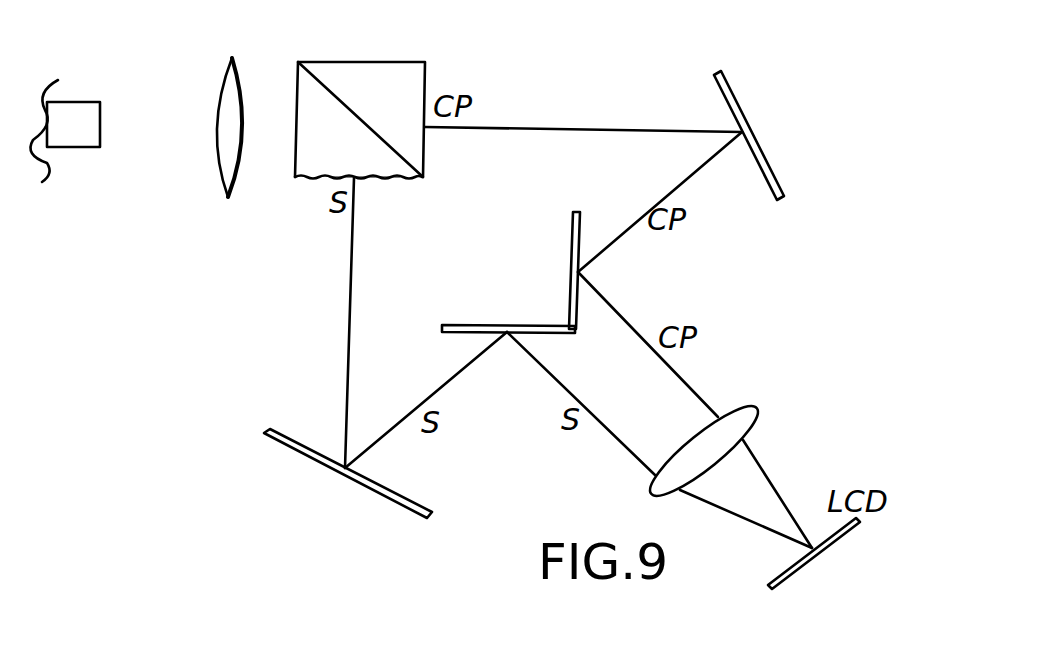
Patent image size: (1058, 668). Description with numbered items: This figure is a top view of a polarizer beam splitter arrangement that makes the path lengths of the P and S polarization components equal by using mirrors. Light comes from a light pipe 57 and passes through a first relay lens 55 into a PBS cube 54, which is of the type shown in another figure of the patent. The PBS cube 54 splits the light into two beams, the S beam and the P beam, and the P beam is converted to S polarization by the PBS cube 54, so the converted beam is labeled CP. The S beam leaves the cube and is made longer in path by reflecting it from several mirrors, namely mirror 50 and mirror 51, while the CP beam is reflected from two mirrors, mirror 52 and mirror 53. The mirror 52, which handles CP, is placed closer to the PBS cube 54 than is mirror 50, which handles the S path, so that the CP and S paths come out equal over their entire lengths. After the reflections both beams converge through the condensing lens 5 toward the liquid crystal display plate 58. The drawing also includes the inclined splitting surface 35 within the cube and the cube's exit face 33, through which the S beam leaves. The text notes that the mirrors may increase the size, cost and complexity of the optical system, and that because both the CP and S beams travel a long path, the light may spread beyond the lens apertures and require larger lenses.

The light pipe 57 is at (78, 107).
The first relay lens 55 is at (240, 167).
The PBS cube 54 is at (395, 62).
The polarization splitting surface 35 is at (362, 122).
The exit face of beam splitter 33 is at (393, 182).
The mirror 52 is at (758, 132).
The mirror 53 is at (570, 252).
The mirror 51 is at (470, 325).
The mirror 50 is at (308, 465).
The condenser lens 5 is at (752, 407).
The LCD plate 58 is at (797, 567).